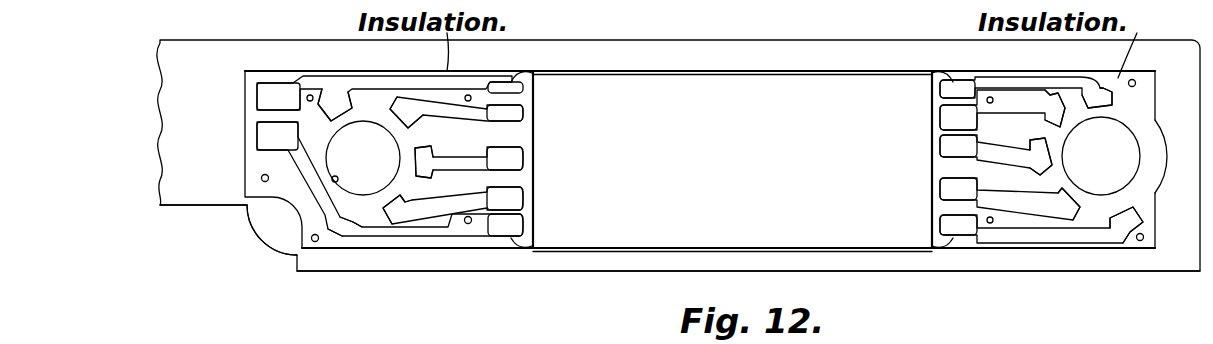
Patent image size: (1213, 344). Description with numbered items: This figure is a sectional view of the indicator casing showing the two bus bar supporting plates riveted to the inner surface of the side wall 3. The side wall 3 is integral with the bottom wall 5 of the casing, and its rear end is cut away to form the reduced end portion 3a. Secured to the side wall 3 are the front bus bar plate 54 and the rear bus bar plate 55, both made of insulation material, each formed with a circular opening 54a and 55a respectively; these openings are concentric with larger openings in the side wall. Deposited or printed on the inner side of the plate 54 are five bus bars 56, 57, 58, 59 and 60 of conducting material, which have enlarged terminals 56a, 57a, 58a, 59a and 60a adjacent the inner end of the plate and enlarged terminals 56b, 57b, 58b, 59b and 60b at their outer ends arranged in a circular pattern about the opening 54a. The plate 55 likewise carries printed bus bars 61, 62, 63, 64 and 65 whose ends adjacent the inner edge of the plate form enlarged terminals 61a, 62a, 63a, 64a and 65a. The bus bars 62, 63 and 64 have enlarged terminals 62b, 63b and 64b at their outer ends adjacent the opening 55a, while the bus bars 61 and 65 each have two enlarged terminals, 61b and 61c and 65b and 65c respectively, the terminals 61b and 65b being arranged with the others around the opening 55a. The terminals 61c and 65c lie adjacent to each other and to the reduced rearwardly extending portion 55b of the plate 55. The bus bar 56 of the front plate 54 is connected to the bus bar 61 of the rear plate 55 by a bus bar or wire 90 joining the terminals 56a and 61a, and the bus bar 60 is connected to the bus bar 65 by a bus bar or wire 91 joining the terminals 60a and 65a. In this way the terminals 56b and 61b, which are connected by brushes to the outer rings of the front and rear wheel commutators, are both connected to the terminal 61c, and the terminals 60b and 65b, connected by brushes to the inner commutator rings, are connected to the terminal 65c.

The side wall 3 is at (805, 52).
The reduced end portion 3a is at (198, 193).
The bottom wall 5 is at (905, 273).
The bus bar plate 54 is at (1155, 70).
The circular opening 54a is at (1137, 137).
The bus bar plate 55 is at (265, 71).
The circular opening 55a is at (333, 182).
The reduced rearwardly extending portion 55b is at (261, 178).
The bus bar 56 is at (1010, 240).
The enlarged terminal 56a is at (940, 228).
The enlarged terminal 56b is at (1132, 225).
The bus bar 57 is at (1010, 188).
The enlarged terminal 57a is at (940, 190).
The enlarged terminal 57b is at (1073, 210).
The bus bar 58 is at (1010, 160).
The enlarged terminal 58a is at (940, 150).
The enlarged terminal 58b is at (1055, 163).
The bus bar 59 is at (1030, 105).
The enlarged terminal 59a is at (940, 117).
The enlarged terminal 59b is at (1063, 125).
The bus bar 60 is at (1040, 76).
The enlarged terminal 60a is at (940, 90).
The enlarged terminal 60b is at (1115, 102).
The bus bar 61 is at (431, 239).
The enlarged terminal 61a is at (525, 228).
The enlarged terminal 61b is at (341, 230).
The enlarged terminal 61c is at (268, 132).
The bus bar 62 is at (467, 190).
The enlarged terminal 62a is at (524, 192).
The enlarged terminal 62b is at (402, 194).
The bus bar 63 is at (470, 160).
The enlarged terminal 63a is at (520, 158).
The enlarged terminal 63b is at (413, 152).
The bus bar 64 is at (446, 108).
The enlarged terminal 64a is at (523, 121).
The enlarged terminal 64b is at (393, 97).
The bus bar 65 is at (384, 98).
The enlarged terminal 65a is at (525, 92).
The enlarged terminal 65b is at (331, 100).
The enlarged terminal 65c is at (260, 98).
The bus bar or wire 90 is at (672, 249).
The bus bar or wire 91 is at (740, 71).